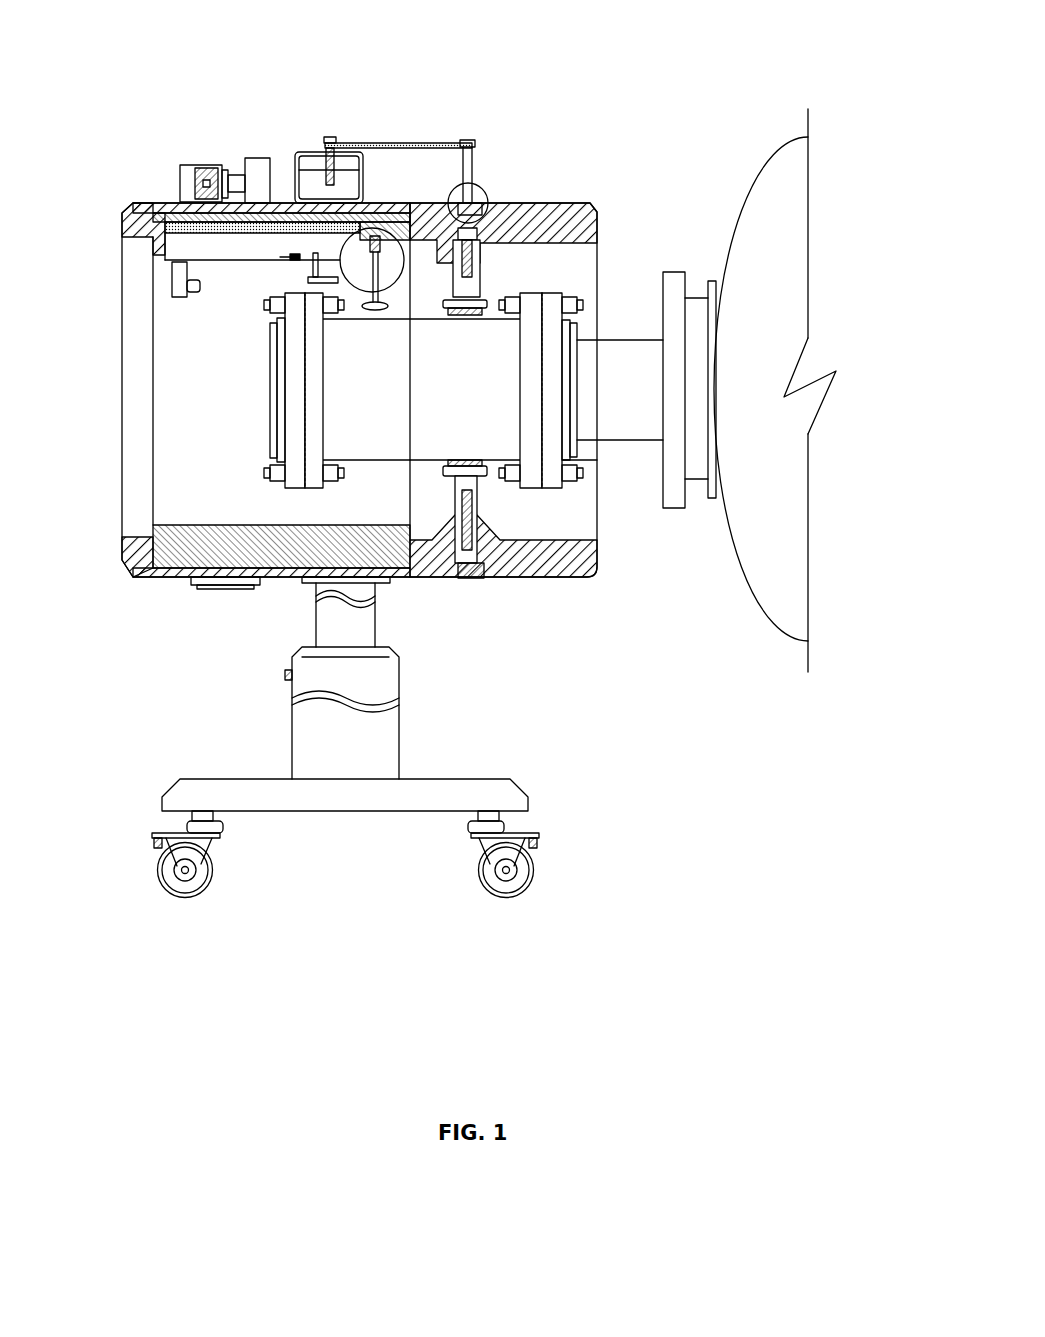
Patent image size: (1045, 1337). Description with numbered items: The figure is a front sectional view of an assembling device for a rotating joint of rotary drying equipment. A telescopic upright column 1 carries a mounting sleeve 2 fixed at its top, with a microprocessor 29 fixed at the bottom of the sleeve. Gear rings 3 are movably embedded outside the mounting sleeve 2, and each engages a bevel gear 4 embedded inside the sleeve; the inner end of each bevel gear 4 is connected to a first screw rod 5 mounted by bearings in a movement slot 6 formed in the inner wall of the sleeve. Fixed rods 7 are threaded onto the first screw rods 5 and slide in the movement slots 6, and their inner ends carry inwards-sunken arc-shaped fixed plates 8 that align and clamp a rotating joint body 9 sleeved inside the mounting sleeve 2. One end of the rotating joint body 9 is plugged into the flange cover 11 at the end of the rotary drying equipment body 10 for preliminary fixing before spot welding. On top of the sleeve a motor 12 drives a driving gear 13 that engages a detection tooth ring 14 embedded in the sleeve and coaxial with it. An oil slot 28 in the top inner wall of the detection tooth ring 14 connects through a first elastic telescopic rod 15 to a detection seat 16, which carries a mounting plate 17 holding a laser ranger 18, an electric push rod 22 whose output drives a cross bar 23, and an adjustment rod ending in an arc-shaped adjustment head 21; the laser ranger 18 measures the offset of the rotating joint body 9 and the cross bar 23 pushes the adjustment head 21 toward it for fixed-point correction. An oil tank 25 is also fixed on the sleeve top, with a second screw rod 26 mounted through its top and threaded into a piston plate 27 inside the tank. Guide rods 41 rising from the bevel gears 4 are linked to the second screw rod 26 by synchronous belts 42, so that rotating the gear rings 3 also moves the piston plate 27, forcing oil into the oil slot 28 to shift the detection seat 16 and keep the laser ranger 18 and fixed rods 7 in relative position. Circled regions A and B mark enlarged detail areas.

The telescopic upright column 1 is at (342, 732).
The mounting sleeve 2 is at (547, 557).
The gear ring 3 is at (478, 578).
The bevel gear 4 is at (457, 560).
The first screw rod 5 is at (480, 247).
The movement slot 6 is at (473, 238).
The fixed rod 7 is at (472, 290).
The fixed plate 8 is at (455, 462).
The rotating joint body 9 is at (543, 393).
The rotary drying equipment body 10 is at (759, 296).
The flange cover 11 is at (680, 378).
The motor 12 is at (197, 167).
The driving gear 13 is at (257, 170).
The detection tooth ring 14 is at (178, 577).
The first elastic telescopic rod 15 is at (178, 207).
The detection seat 16 is at (182, 252).
The mounting plate 17 is at (180, 290).
The laser ranger 18 is at (194, 288).
The adjustment head 21 is at (372, 315).
The electric push rod 22 is at (290, 262).
The cross bar 23 is at (333, 275).
The oil tank 25 is at (360, 170).
The second screw rod 26 is at (332, 142).
The piston plate 27 is at (323, 168).
The oil slot 28 is at (150, 232).
The microprocessor 29 is at (247, 583).
The guide rod 41 is at (465, 180).
The synchronous belt 42 is at (457, 143).
The detail A is at (485, 195).
The detail B is at (392, 283).